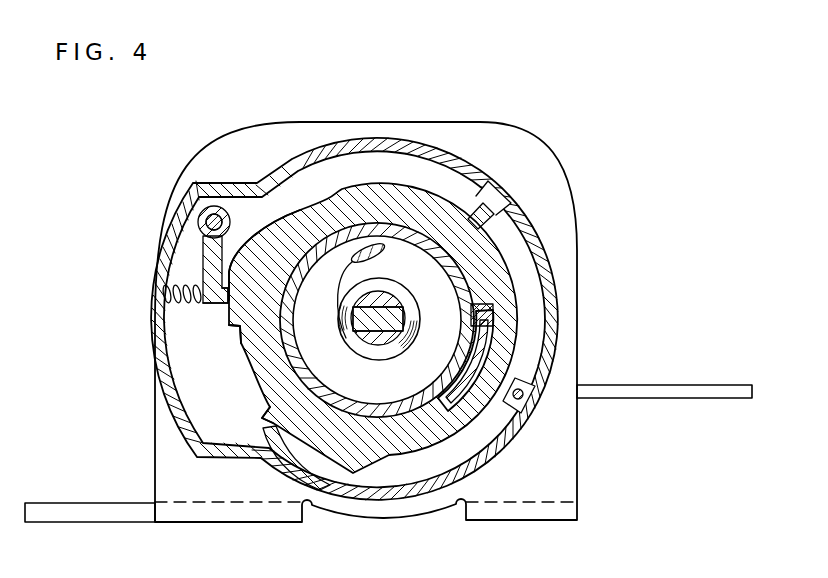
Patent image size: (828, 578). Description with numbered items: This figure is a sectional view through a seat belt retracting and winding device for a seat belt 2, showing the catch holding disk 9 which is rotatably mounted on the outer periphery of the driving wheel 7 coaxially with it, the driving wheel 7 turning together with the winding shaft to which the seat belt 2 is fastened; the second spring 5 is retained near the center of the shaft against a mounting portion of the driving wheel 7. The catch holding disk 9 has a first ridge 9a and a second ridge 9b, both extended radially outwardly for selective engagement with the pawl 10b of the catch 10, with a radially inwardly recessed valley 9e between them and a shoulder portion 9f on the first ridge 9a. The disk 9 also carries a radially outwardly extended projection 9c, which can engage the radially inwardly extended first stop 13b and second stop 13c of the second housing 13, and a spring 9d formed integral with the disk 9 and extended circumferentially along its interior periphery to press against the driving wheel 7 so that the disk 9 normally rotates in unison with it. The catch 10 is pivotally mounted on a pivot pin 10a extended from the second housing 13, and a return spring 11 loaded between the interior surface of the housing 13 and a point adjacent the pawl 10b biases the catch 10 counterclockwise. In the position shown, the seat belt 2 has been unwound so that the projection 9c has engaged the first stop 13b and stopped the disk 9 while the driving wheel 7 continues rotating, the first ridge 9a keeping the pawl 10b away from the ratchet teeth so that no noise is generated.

The seat belt 2 is at (667, 398).
The second spring 5 is at (401, 352).
The driving wheel 7 is at (423, 238).
The catch holding disk 9 is at (417, 192).
The first ridge 9a is at (240, 278).
The second ridge 9b is at (264, 430).
The projection 9c is at (502, 220).
The spring 9d is at (481, 316).
The valley 9e is at (268, 386).
The shoulder portion 9f is at (238, 334).
The catch 10 is at (213, 262).
The pivot pin 10a is at (210, 220).
The pawl 10b is at (212, 304).
The return spring 11 is at (186, 306).
The second housing 13 is at (344, 148).
The first stop 13b is at (488, 203).
The second stop 13c is at (532, 404).